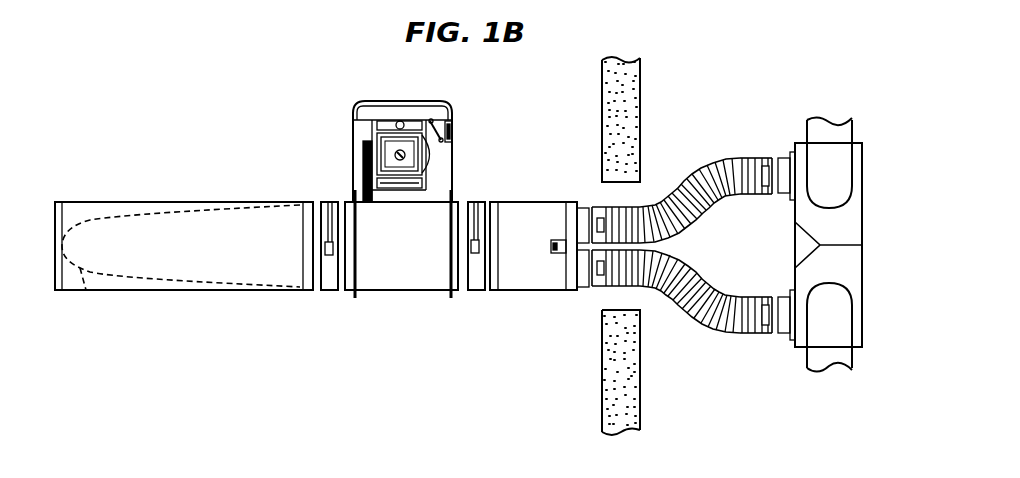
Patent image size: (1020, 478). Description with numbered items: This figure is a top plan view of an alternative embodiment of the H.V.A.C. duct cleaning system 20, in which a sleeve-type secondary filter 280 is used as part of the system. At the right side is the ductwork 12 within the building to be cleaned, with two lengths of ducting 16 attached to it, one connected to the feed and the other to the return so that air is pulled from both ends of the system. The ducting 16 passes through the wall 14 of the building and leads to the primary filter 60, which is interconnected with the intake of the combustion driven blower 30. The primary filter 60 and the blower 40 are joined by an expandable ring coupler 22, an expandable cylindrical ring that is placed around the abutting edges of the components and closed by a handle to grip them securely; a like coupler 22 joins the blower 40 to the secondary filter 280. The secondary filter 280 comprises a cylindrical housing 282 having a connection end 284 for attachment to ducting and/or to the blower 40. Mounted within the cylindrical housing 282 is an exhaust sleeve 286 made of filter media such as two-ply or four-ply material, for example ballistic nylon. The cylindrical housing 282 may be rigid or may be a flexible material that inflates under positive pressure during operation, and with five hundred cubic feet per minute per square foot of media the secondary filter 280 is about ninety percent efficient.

The ductwork 12 is at (865, 218).
The wall 14 is at (641, 117).
The ducting 16 is at (726, 158).
The H.V.A.C. duct cleaning system 20 is at (344, 100).
The expandable ring coupler 22 is at (326, 198).
The combustion driven blower 30 is at (463, 121).
The blower 40 is at (400, 291).
The primary filter 60 is at (523, 325).
The secondary filter 280 is at (162, 326).
The cylindrical housing 282 is at (121, 201).
The connection end 284 is at (305, 291).
The exhaust sleeve 286 is at (88, 292).